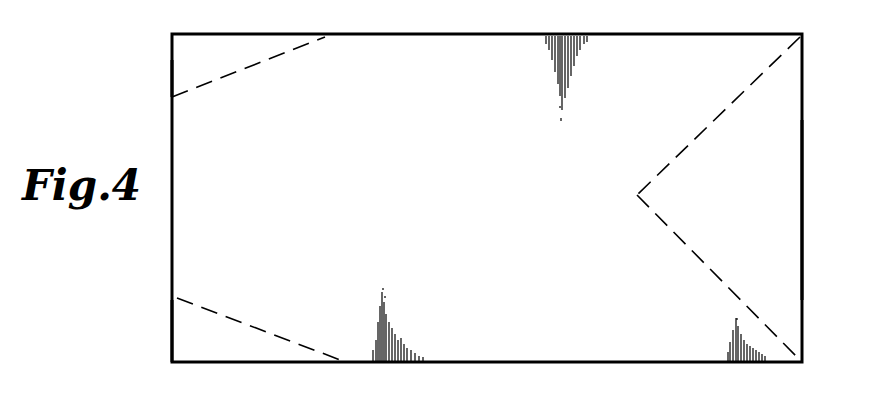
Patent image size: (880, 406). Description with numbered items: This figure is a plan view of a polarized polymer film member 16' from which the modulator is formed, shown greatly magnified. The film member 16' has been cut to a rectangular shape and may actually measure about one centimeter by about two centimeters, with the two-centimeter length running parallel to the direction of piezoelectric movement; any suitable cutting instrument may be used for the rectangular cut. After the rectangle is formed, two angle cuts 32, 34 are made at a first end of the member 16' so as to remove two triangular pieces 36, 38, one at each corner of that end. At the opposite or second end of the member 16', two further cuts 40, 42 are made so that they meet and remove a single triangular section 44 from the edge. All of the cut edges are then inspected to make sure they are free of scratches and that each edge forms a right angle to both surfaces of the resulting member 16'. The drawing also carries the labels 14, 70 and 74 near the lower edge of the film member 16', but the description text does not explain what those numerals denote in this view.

The housing 14 is at (123, 399).
The polarized polymer film member 16' is at (487, 218).
The angle cut 32 is at (222, 78).
The angle cut 34 is at (278, 336).
The triangular piece 36 is at (195, 66).
The triangular piece 38 is at (185, 337).
The cut 40 is at (708, 128).
The cut 42 is at (726, 285).
The triangular section 44 is at (787, 226).
The adhesive area 70 is at (580, 347).
The adhesive area 74 is at (586, 221).